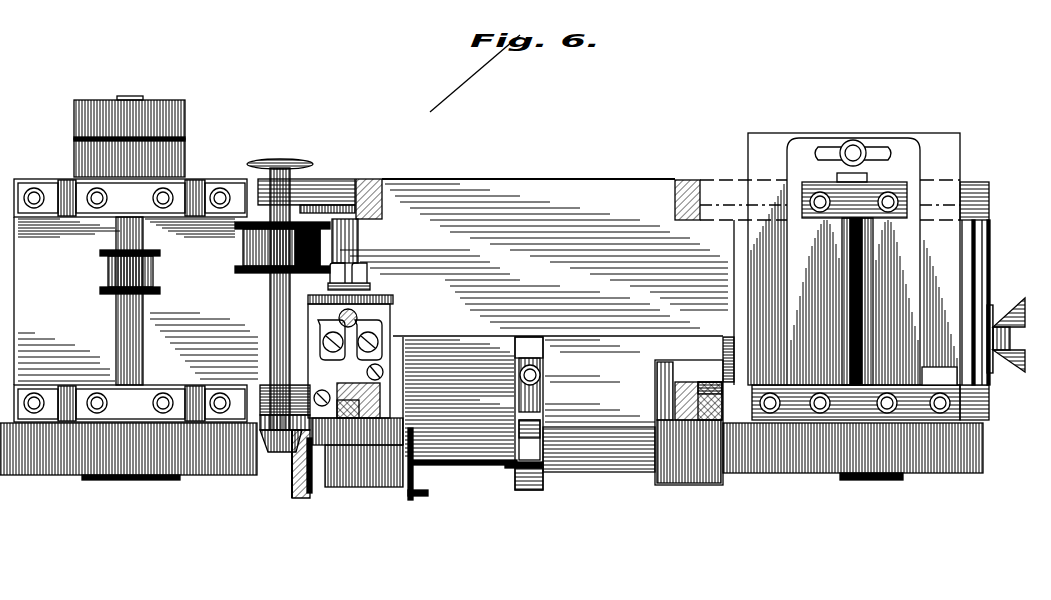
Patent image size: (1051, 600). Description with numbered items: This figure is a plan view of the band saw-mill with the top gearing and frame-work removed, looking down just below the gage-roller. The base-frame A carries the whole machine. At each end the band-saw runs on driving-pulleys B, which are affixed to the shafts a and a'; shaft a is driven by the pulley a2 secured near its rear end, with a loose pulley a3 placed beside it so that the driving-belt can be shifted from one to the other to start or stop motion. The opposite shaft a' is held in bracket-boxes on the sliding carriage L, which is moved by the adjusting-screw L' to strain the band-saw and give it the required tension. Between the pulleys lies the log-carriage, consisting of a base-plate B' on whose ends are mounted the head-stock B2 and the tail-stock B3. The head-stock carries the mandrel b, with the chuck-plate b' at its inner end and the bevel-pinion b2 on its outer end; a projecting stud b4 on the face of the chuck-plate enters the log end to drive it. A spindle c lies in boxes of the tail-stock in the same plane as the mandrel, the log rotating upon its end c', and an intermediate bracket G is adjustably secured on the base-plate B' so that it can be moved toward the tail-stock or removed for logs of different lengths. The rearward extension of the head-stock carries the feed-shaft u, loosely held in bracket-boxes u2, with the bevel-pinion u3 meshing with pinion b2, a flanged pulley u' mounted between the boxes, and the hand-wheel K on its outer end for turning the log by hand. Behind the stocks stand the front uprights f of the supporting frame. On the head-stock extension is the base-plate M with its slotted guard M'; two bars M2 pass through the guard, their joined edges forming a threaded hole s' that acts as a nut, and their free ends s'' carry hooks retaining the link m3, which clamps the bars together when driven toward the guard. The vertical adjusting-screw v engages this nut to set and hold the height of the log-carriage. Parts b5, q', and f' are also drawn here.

The base-frame A is at (487, 300).
The loose pulley a3 is at (140, 117).
The pulley a2 is at (176, 156).
The shaft a is at (137, 301).
The pulley q' is at (122, 272).
The feed-shaft u is at (271, 299).
The hand-wheel K is at (280, 151).
The bracket-boxes u2 is at (306, 196).
The flanged pulley u' is at (282, 263).
The vertical adjusting-screw v is at (325, 274).
The front uprights f is at (516, 310).
The free ends of the bars s'' is at (364, 270).
The link m3 is at (372, 286).
The slotted guard M' is at (372, 299).
The threaded hole s' is at (374, 319).
The bars M2 is at (375, 355).
The base-plate M is at (349, 361).
The head-stock B2 is at (380, 487).
The chuck-plate b' is at (424, 474).
The projecting stud b4 is at (430, 490).
The slide b5 is at (440, 462).
The bevel-pinion u3 is at (281, 450).
The bevel-pinion b2 is at (300, 496).
The mandrel b is at (275, 470).
The end of spindle c' is at (519, 419).
The intermediate bracket G is at (545, 362).
The spindle c is at (599, 465).
The base-plate B' is at (600, 381).
The tail-stock B3 is at (689, 433).
The adjusting plate f' is at (709, 379).
The driving-pulleys B is at (491, 457).
The shaft a' is at (854, 259).
The sliding carriage L is at (871, 301).
The adjusting-screw L' is at (1006, 349).